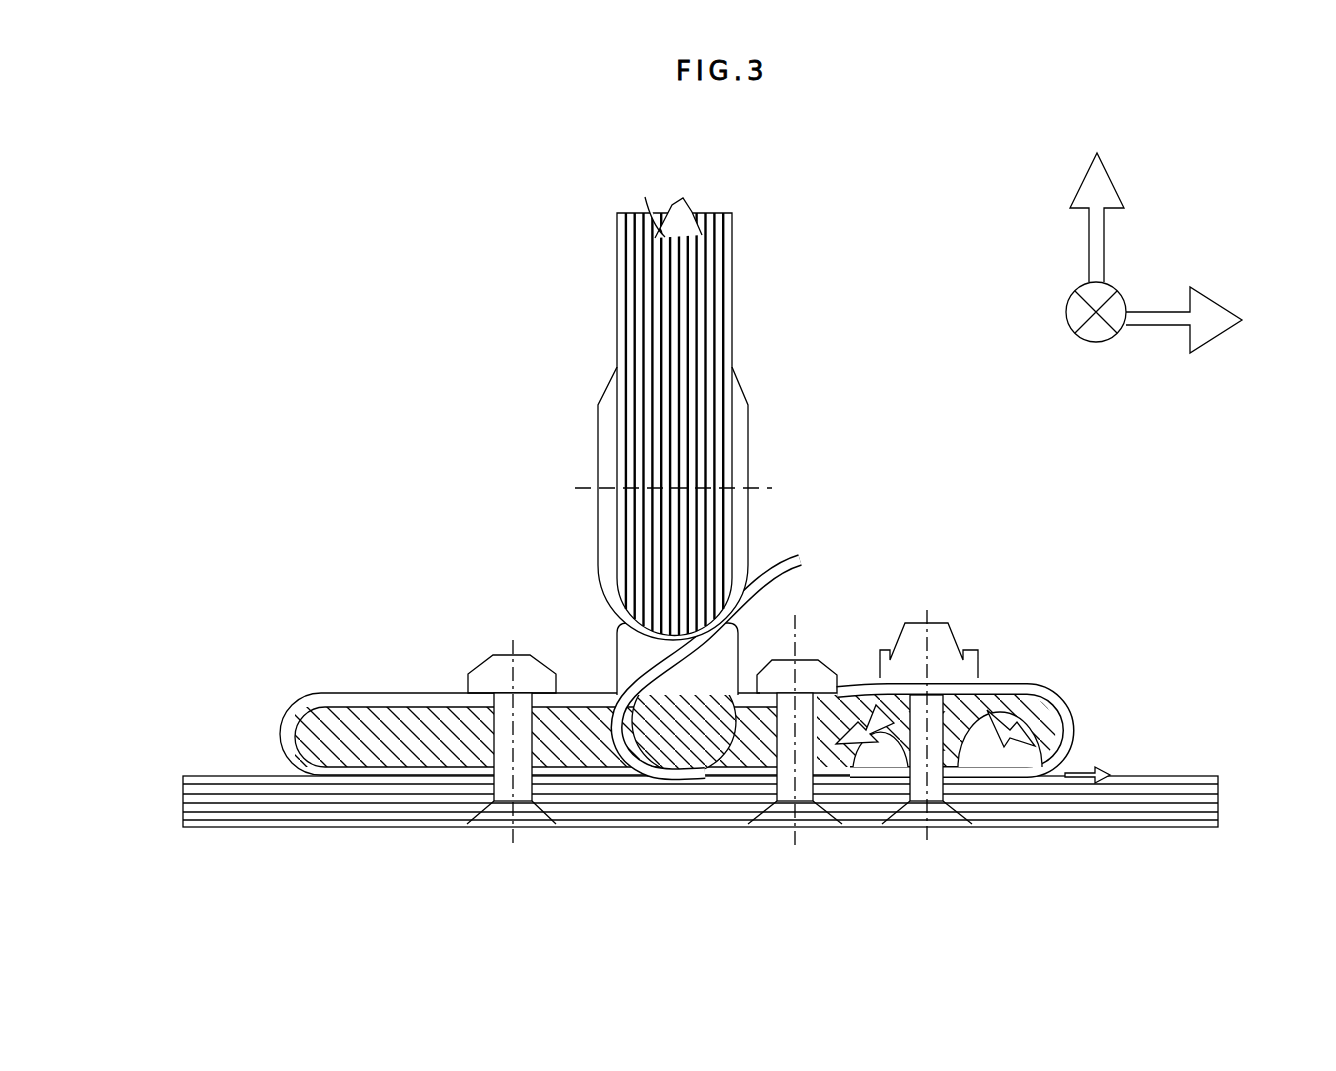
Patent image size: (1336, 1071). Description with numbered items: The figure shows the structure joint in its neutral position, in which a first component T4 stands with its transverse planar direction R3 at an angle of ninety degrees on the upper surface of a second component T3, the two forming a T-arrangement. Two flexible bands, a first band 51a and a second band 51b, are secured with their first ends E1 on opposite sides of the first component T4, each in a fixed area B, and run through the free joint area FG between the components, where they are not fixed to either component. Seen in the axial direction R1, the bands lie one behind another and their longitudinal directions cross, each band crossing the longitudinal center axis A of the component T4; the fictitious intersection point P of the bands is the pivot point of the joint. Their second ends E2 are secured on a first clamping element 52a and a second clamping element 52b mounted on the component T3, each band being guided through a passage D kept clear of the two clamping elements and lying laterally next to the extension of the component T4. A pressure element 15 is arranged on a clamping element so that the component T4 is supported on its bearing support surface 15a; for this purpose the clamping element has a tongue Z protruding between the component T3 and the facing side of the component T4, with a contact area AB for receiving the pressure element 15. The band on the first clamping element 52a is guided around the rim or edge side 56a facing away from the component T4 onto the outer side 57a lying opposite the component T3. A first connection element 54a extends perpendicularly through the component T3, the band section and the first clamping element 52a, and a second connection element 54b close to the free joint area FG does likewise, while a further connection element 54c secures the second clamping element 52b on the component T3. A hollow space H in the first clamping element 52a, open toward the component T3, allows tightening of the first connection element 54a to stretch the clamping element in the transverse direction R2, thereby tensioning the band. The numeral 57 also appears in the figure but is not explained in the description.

The pressure element 15 is at (730, 652).
The bearing support surface 15a is at (800, 562).
The first band 51a is at (1078, 720).
The second band 51b is at (283, 715).
The first clamping element 52a is at (964, 732).
The second clamping element 52b is at (311, 673).
The first connection element 54a is at (942, 820).
The second connection element 54b is at (808, 826).
The further connection element 54c is at (500, 822).
The rim or edge side 56a is at (1093, 672).
The base plate 57 is at (526, 594).
The outer side 57a is at (380, 757).
The second component T3 is at (1213, 782).
The first component T4 is at (652, 210).
The first ends E1 is at (752, 383).
The second ends E2 is at (578, 685).
The free joint area FG is at (576, 620).
The intersection point P is at (642, 658).
The fixed area B is at (590, 515).
The longitudinal center axis A is at (675, 100).
The passage D is at (578, 770).
The tongue Z is at (680, 760).
The contact area AB is at (667, 742).
The hollow space H is at (995, 776).
The axial direction R1 is at (1076, 319).
The transverse direction R2 is at (1204, 320).
The transverse planar direction R3 is at (1073, 217).